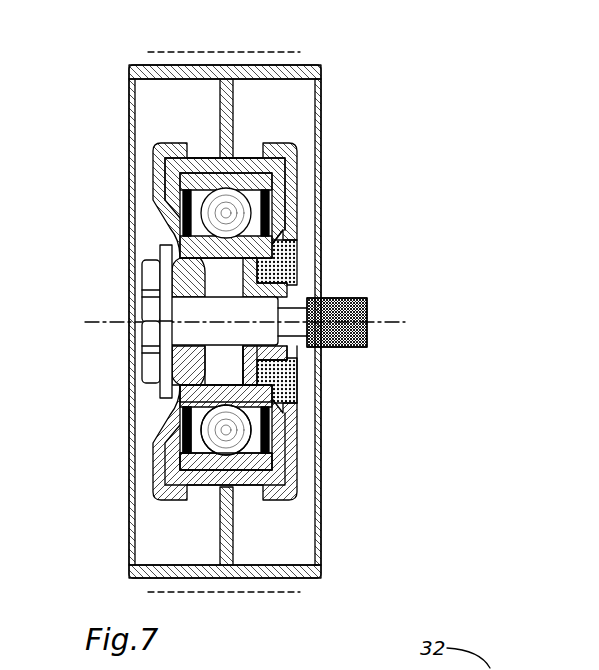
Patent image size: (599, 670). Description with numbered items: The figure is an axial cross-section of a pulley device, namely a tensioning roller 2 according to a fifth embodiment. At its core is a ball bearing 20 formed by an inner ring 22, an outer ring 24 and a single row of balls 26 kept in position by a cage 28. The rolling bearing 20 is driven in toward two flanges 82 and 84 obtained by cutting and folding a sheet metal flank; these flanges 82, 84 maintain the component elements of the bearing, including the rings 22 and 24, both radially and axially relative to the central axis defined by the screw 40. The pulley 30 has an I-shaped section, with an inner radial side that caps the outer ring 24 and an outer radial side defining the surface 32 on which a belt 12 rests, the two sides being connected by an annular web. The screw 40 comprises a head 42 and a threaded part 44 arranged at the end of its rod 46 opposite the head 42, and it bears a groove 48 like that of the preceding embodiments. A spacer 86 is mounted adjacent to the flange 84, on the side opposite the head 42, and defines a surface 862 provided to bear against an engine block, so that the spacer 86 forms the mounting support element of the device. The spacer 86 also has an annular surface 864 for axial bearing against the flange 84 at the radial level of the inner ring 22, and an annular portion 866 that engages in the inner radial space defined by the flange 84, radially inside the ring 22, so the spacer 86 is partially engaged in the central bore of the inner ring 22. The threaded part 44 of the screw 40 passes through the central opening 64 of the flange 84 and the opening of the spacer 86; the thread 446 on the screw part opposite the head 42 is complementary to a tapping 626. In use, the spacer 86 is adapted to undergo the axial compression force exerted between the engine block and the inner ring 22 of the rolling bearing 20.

The tensioning roller 2 is at (364, 96).
The belt 12 is at (230, 57).
The ball bearing 20 is at (440, 450).
The inner ring 22 is at (282, 405).
The outer ring 24 is at (247, 463).
The balls 26 is at (226, 430).
The cage 28 is at (267, 447).
The pulley 30 is at (166, 568).
The surface 32 is at (137, 58).
The screw 40 is at (186, 308).
The head 42 is at (148, 372).
The threaded part 44 is at (368, 335).
The rod 46 is at (182, 360).
The groove 48 is at (299, 356).
The central opening 64 is at (258, 356).
The flange 82 is at (160, 175).
The flange 84 is at (293, 178).
The spacer 86 is at (262, 390).
The thread 446 is at (353, 288).
The tapping 626 is at (290, 275).
The surface 862 is at (268, 273).
The annular surface 864 is at (195, 398).
The annular portion 866 is at (270, 218).